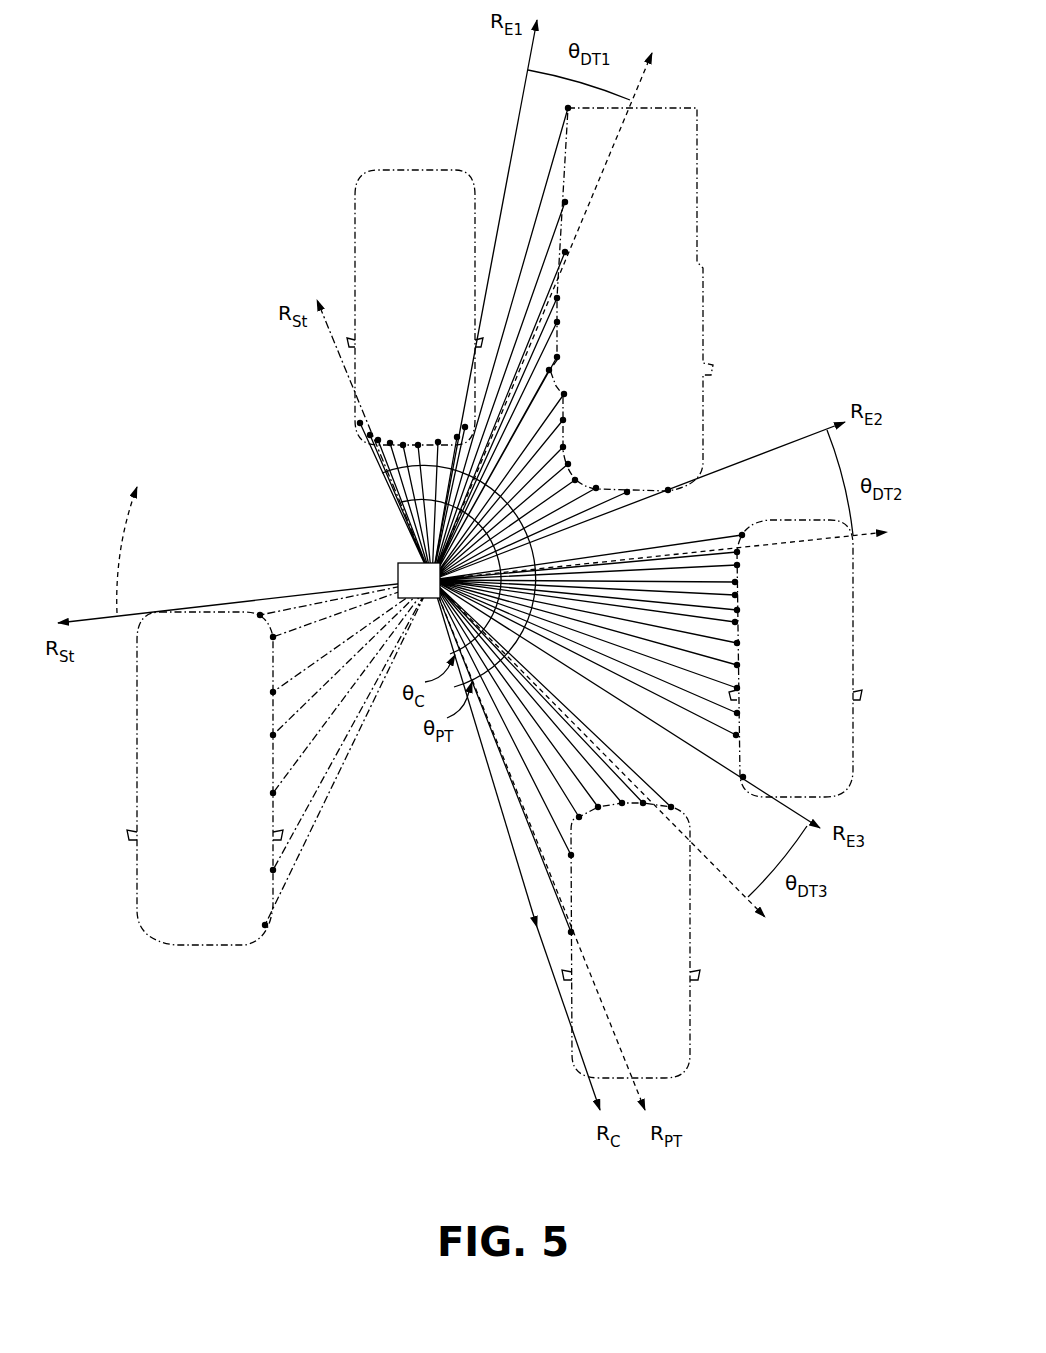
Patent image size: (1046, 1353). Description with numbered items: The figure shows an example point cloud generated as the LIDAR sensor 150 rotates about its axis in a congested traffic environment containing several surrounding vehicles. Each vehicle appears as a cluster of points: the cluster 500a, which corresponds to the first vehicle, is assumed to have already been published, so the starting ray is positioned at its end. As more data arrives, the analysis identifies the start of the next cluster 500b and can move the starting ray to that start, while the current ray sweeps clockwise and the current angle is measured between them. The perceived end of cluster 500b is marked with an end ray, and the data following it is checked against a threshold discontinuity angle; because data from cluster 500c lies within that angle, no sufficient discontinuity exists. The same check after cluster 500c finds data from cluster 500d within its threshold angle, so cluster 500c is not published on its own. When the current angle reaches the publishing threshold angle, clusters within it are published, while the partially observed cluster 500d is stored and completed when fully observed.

The LIDAR sensor 150 is at (398, 563).
The cluster 500a is at (130, 763).
The cluster 500b is at (355, 222).
The cluster 500c is at (700, 262).
The cluster 500d is at (855, 627).